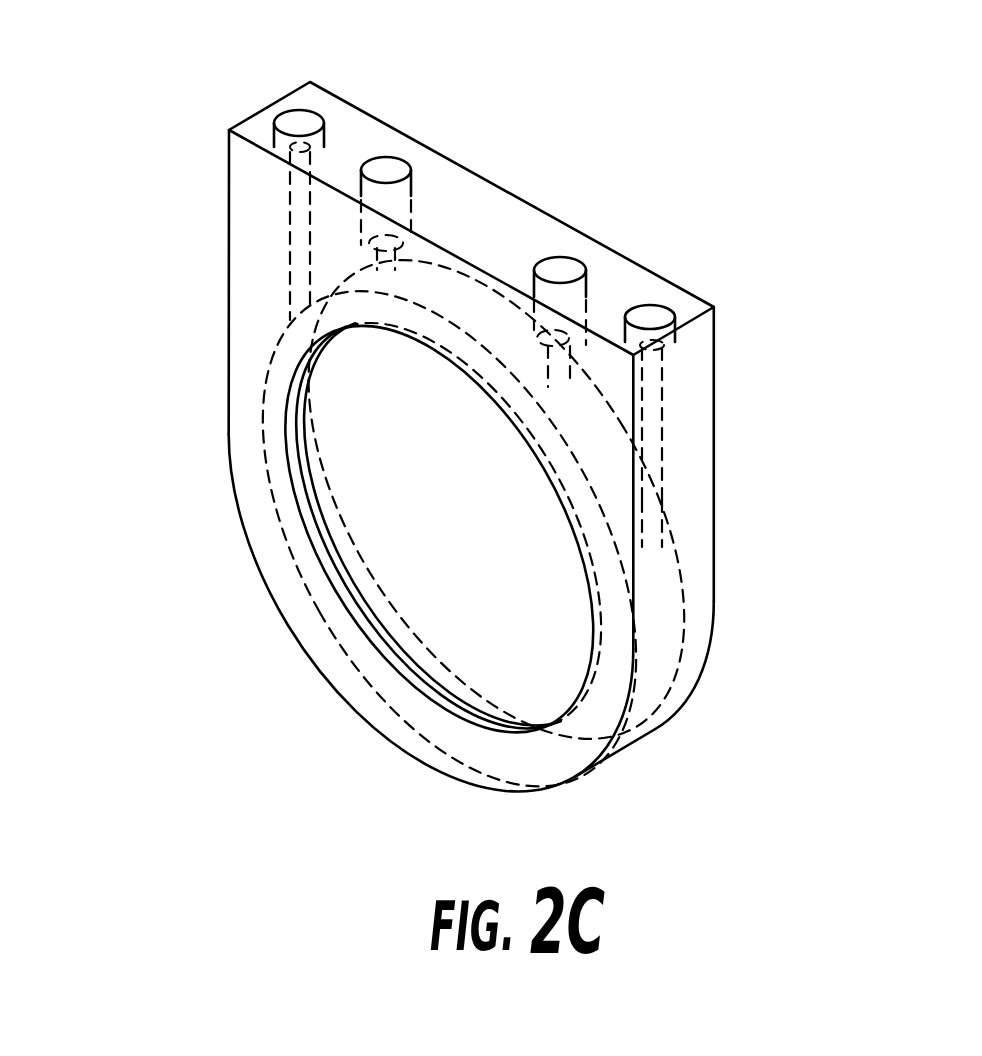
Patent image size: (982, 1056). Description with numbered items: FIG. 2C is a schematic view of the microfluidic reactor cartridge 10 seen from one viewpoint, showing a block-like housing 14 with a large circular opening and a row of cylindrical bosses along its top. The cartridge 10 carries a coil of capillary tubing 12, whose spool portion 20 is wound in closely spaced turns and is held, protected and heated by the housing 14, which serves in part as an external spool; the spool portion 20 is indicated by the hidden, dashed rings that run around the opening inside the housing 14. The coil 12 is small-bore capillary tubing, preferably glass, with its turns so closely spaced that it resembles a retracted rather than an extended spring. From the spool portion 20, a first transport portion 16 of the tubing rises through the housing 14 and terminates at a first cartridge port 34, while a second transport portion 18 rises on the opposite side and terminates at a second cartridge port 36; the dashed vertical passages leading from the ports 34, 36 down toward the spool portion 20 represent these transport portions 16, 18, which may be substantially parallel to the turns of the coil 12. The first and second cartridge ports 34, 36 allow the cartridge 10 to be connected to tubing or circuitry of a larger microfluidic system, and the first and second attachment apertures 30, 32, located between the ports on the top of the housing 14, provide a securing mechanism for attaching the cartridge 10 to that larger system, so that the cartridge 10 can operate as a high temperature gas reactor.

The microfluidic reactor cartridge 10 is at (158, 158).
The coil of capillary tubing 12 is at (670, 545).
The housing 14 is at (700, 405).
The first transport portion 16 is at (300, 262).
The second transport portion 18 is at (656, 386).
The spool portion 20 is at (580, 757).
The first attachment aperture 30 is at (386, 168).
The second attachment aperture 32 is at (560, 266).
The first cartridge port 34 is at (288, 120).
The second cartridge port 36 is at (655, 310).